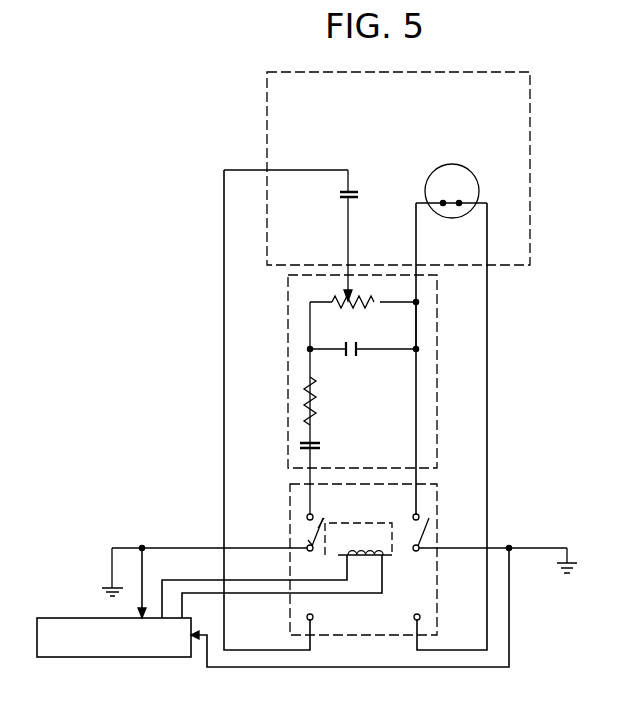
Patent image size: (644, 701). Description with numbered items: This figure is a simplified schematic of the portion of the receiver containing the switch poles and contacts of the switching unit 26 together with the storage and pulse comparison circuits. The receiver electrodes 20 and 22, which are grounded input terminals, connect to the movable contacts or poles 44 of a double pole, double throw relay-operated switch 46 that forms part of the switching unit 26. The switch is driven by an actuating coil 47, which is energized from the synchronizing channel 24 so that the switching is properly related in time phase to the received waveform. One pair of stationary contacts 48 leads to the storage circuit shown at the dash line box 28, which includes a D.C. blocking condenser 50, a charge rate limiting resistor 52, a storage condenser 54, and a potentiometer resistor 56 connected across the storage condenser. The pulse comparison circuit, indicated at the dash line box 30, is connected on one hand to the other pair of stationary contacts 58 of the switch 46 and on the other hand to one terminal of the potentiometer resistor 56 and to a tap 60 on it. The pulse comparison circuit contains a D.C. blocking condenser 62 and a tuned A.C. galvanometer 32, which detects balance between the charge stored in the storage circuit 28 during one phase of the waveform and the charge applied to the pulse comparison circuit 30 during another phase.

The grounded electrode 20 is at (112, 568).
The grounded electrode 22 is at (569, 560).
The synchronizing channel 24 is at (36, 634).
The switching unit 26 is at (437, 493).
The storage circuit 28 is at (437, 405).
The pulse comparison circuit 30 is at (531, 105).
The tuned A.C. galvanometer 32 is at (470, 172).
The movable contacts 44 is at (320, 529).
The relay-operated switch 46 is at (304, 531).
The actuating coil 47 is at (356, 561).
The stationary contacts 48 is at (313, 513).
The D.C. blocking condenser 50 is at (314, 442).
The charge rate limiting resistor 52 is at (316, 401).
The storage condenser 54 is at (347, 343).
The potentiometer resistor 56 is at (376, 306).
The stationary contacts 58 is at (313, 616).
The tap 60 is at (349, 252).
The D.C. blocking condenser 62 is at (352, 190).